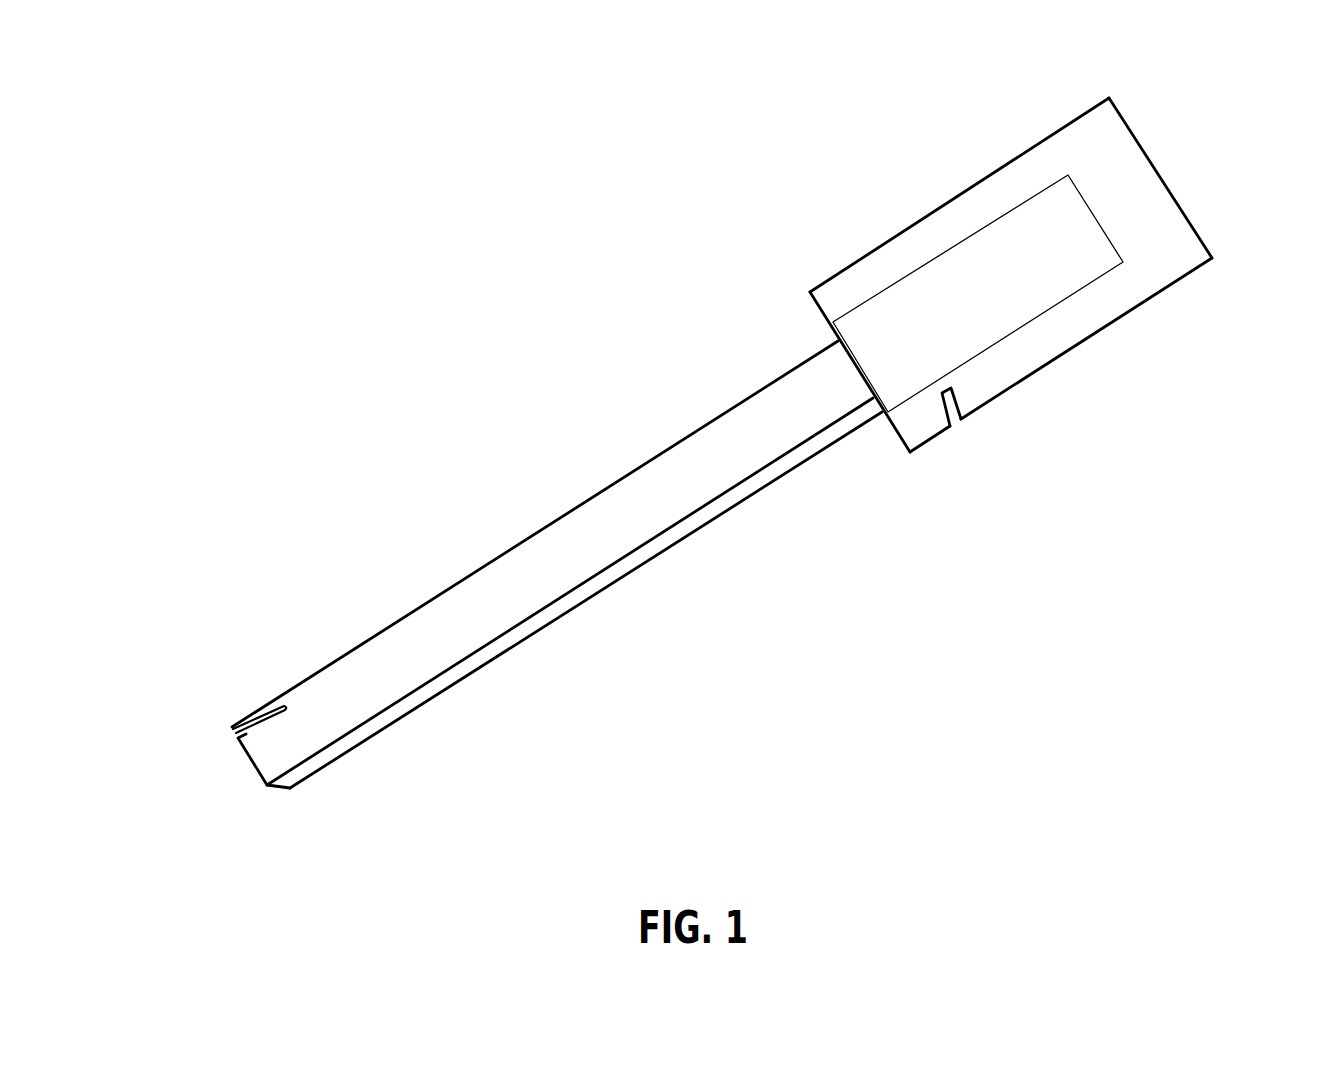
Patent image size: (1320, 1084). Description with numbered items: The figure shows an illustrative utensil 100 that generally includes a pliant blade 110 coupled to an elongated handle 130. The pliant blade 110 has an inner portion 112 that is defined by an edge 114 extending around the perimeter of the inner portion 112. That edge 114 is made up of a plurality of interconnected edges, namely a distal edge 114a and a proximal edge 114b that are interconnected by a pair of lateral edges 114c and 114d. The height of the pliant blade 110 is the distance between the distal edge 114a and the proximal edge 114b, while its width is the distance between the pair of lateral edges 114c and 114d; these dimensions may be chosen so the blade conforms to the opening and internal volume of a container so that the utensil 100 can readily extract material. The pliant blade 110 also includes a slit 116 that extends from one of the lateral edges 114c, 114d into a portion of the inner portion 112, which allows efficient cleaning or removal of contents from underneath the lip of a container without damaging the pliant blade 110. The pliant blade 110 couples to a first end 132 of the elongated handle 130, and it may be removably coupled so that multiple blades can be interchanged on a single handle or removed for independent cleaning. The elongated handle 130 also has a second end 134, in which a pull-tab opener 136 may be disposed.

The utensil 100 is at (423, 163).
The pliant blade 110 is at (855, 193).
The inner portion 112 is at (1030, 168).
The edge 114 is at (1132, 310).
The distal edge 114a is at (1157, 167).
The proximal edge 114b is at (828, 318).
The lateral edge 114c is at (1047, 365).
The lateral edge 114d is at (942, 207).
The slit 116 is at (944, 405).
The elongated handle 130 is at (368, 536).
The first end 132 is at (860, 375).
The second end 134 is at (254, 764).
The pull-tab opener 136 is at (241, 658).